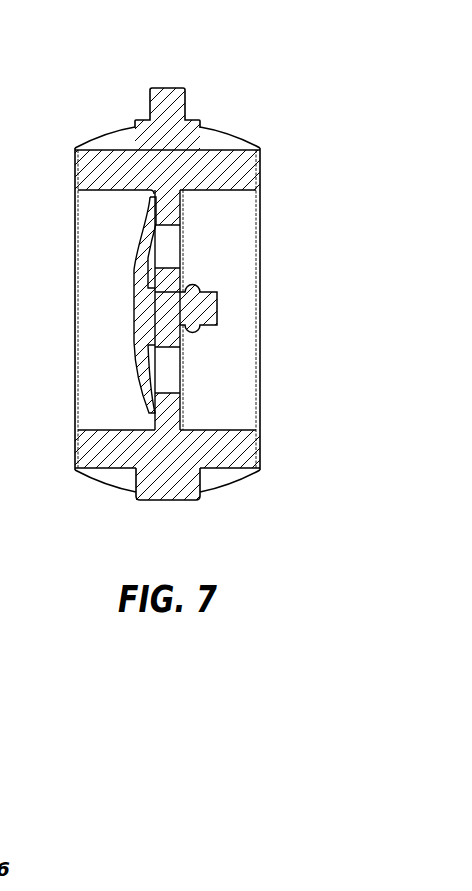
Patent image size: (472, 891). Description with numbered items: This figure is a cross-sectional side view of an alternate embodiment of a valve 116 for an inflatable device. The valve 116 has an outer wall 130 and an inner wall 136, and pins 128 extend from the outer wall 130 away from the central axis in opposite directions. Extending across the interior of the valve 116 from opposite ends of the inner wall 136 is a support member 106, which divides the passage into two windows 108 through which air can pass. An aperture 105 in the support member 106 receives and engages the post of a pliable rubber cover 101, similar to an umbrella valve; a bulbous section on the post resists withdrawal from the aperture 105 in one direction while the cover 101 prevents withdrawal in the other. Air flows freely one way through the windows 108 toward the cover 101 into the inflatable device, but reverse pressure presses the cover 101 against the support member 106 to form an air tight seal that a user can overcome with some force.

The valve 116 is at (258, 84).
The outer wall 130 is at (208, 125).
The pins 128 is at (168, 95).
The inner wall 136 is at (221, 190).
The windows 108 is at (173, 245).
The aperture 105 is at (175, 280).
The cover 101 is at (140, 322).
The support member 106 is at (172, 412).